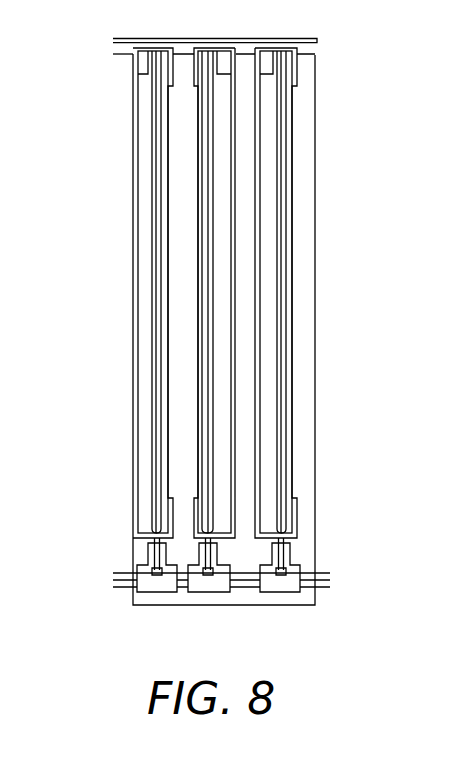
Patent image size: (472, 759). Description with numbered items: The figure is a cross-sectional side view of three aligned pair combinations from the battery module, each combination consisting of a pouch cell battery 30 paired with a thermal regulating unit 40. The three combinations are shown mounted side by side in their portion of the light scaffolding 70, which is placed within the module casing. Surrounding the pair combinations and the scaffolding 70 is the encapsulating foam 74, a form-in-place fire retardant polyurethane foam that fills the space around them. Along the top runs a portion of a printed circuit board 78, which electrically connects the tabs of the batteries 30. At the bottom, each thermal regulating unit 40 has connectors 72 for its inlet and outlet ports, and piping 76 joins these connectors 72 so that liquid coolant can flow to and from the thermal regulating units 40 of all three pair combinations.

The printed circuit board 78 is at (318, 41).
The encapsulating foam 74 is at (316, 101).
The scaffolding 70 is at (133, 62).
The pouch cell battery 30 is at (133, 281).
The thermal regulating unit 40 is at (152, 324).
The connectors 72 is at (150, 580).
The piping 76 is at (332, 580).